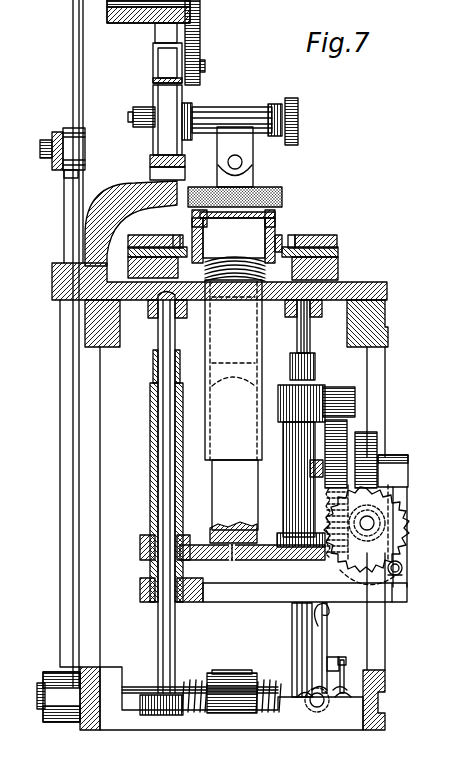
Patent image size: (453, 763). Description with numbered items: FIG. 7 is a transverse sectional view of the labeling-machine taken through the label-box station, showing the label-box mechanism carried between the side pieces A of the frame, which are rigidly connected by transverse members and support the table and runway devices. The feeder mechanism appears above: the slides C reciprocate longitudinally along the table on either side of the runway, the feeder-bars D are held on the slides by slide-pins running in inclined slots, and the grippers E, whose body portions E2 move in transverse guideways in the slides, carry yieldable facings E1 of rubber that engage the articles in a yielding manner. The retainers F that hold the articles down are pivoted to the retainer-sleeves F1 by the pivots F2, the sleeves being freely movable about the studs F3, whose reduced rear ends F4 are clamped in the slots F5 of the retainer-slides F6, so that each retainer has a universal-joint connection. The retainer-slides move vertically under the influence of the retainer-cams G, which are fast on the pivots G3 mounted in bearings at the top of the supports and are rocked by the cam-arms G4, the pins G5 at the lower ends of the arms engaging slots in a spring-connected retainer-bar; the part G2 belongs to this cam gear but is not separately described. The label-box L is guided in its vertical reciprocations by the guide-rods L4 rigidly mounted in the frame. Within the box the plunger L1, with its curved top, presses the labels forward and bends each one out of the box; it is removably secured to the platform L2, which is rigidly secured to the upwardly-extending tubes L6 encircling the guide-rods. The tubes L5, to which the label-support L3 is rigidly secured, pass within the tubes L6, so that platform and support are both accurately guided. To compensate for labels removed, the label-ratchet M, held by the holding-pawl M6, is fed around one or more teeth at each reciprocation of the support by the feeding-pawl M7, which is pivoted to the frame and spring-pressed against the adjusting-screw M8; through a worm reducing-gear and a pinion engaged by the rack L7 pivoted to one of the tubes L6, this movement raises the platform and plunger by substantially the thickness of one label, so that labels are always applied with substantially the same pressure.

The side pieces A is at (98, 572).
The slides C is at (340, 272).
The feeder-bars D is at (316, 237).
The grippers E is at (291, 237).
The yieldable facings E1 is at (279, 237).
The body portion E2 is at (340, 253).
The retainers F is at (283, 190).
The retainer-sleeves F1 is at (250, 126).
The pivots F2 is at (228, 162).
The studs F3 is at (290, 112).
The reduced rear ends of the studs F4 is at (162, 117).
The slots F5 is at (158, 145).
The retainer-slides F6 is at (152, 164).
The retainer-cams G is at (196, 24).
The gear housing G2 is at (146, 24).
The pivots G3 is at (116, 196).
The cam-arms G4 is at (77, 62).
The pins G5 is at (52, 151).
The label-box L is at (233, 335).
The plunger L1 is at (234, 501).
The platform L2 is at (254, 560).
The label-support L3 is at (220, 596).
The guide-rods L4 is at (311, 338).
The tubes L5 is at (180, 571).
The tubes L6 is at (150, 415).
The rack L7 is at (342, 430).
The label-ratchet M is at (404, 528).
The holding-pawl M6 is at (403, 562).
The feeding-pawl M7 is at (336, 618).
The adjusting-screw M8 is at (347, 656).